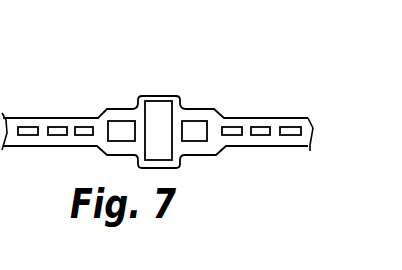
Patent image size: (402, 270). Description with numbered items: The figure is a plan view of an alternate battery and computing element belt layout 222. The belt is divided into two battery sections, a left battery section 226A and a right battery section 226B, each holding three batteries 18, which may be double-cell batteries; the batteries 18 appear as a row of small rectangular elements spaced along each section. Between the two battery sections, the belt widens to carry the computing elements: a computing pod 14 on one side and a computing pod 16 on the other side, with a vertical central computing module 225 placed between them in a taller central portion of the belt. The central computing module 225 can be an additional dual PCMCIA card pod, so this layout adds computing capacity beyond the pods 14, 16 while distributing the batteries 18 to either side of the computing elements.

The belt layout 222 is at (135, 82).
The left battery section 226A is at (13, 116).
The right battery section 226B is at (305, 116).
The batteries 18 is at (82, 127).
The computing pod 14 is at (118, 124).
The vertical central computing module 225 is at (160, 104).
The computing pod 16 is at (198, 122).